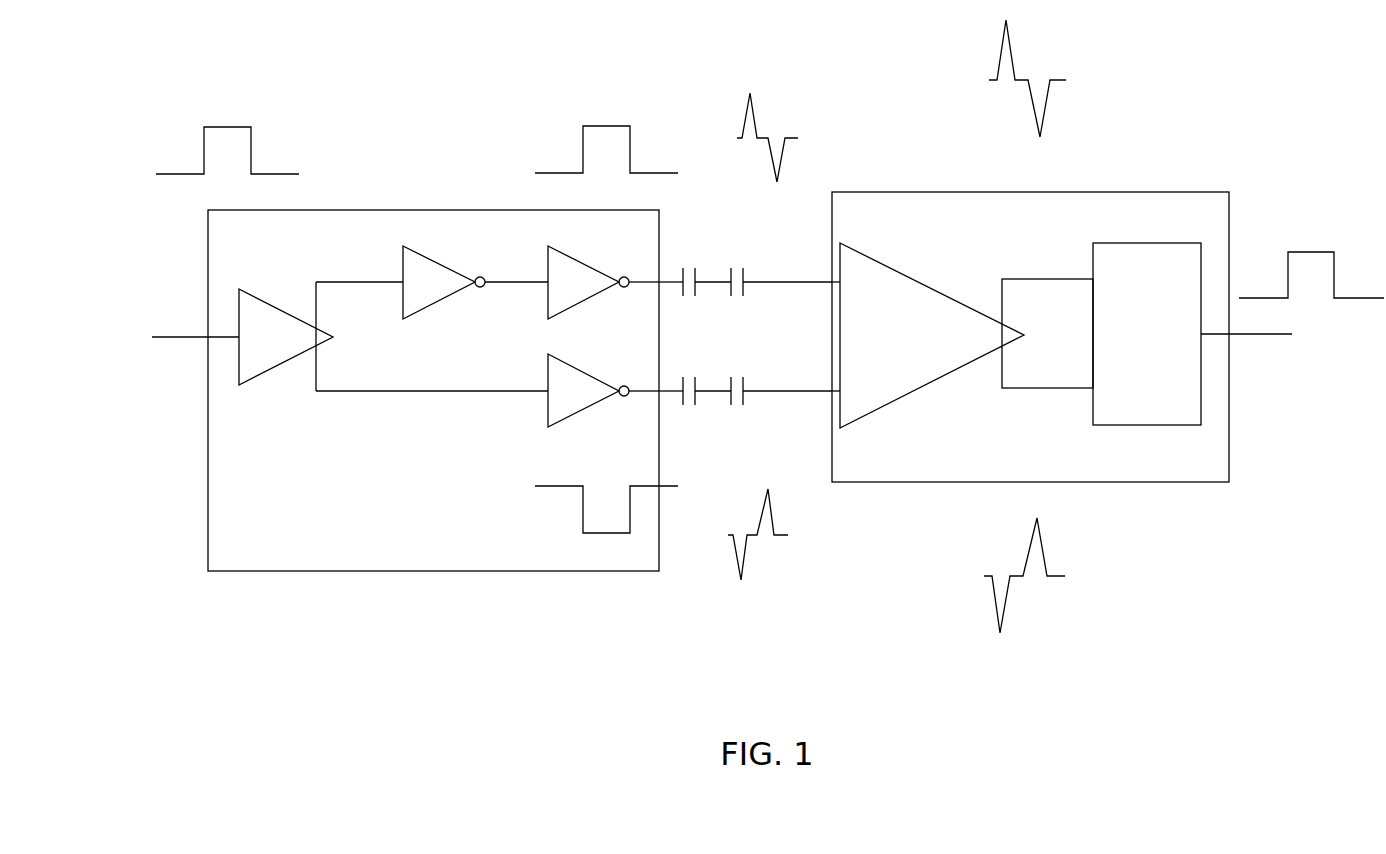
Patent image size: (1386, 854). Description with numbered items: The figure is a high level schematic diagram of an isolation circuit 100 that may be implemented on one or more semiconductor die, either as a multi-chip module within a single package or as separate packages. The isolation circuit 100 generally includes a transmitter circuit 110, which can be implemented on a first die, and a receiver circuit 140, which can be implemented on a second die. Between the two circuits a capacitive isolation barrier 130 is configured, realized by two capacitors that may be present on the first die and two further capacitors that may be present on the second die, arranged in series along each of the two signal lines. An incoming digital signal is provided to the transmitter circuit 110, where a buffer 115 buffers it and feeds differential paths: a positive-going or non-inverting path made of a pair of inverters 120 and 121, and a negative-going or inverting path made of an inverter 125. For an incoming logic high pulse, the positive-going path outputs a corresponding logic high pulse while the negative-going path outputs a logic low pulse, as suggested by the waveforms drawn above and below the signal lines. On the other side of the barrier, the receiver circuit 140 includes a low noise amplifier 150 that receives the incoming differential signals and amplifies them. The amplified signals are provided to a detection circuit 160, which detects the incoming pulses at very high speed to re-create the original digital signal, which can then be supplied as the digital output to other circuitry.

The isolation circuit 100 is at (1252, 116).
The transmitter circuit 110 is at (386, 571).
The buffer 115 is at (247, 293).
The inverter 120 is at (436, 263).
The inverter 121 is at (582, 263).
The inverter 125 is at (582, 372).
The capacitive isolation barrier 130 is at (721, 225).
The receiver circuit 140 is at (1061, 192).
The low noise amplifier 150 is at (913, 277).
The detection circuit 160 is at (1128, 243).